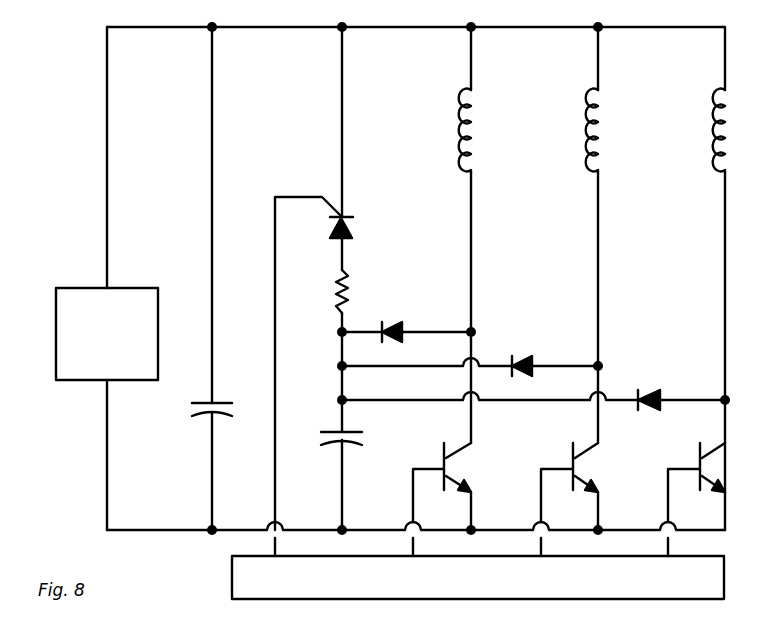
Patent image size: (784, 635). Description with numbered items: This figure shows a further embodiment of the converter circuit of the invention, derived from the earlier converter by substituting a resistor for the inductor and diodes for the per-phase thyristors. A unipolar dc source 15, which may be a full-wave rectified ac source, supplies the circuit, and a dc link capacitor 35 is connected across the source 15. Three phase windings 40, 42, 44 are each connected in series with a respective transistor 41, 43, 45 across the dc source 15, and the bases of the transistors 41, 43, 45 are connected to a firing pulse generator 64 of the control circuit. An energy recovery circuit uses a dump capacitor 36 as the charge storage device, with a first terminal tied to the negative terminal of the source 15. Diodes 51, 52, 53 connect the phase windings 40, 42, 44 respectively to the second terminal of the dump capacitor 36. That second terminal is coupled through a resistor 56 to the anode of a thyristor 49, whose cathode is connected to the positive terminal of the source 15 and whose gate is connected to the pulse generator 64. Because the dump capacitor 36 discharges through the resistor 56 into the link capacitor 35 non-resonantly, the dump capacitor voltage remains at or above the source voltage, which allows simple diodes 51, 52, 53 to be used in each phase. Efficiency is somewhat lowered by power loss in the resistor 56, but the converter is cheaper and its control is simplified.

The unipolar dc source 15 is at (116, 363).
The dc link capacitor 35 is at (204, 416).
The dump capacitor 36 is at (336, 444).
The phase winding 40 is at (465, 117).
The phase winding 42 is at (592, 117).
The phase winding 44 is at (718, 117).
The transistor 41 is at (444, 454).
The transistor 43 is at (564, 454).
The transistor 45 is at (691, 454).
The thyristor 49 is at (353, 226).
The diode 51 is at (394, 324).
The diode 52 is at (527, 354).
The diode 53 is at (653, 392).
The resistor 56 is at (336, 290).
The firing pulse generator 64 is at (490, 588).